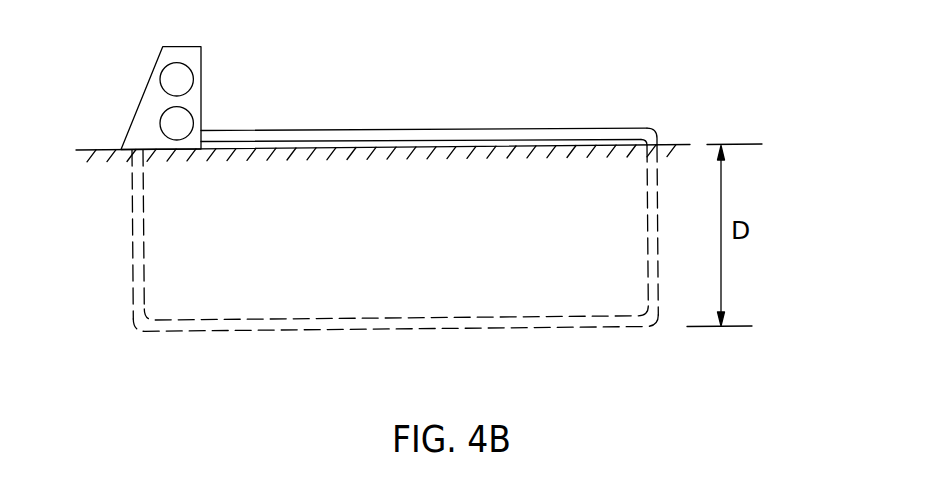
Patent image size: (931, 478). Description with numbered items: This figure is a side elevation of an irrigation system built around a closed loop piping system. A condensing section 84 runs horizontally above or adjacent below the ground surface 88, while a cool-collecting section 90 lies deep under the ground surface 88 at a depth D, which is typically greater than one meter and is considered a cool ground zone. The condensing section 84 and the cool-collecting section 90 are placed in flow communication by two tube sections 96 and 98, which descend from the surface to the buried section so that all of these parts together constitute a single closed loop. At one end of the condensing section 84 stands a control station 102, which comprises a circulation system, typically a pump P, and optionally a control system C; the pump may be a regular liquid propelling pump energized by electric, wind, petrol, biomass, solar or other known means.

The control station 102 is at (201, 95).
The condensing section 84 is at (375, 131).
The ground surface 88 is at (668, 145).
The tube section 96 is at (136, 236).
The tube section 98 is at (648, 236).
The cool-collecting section 90 is at (362, 325).